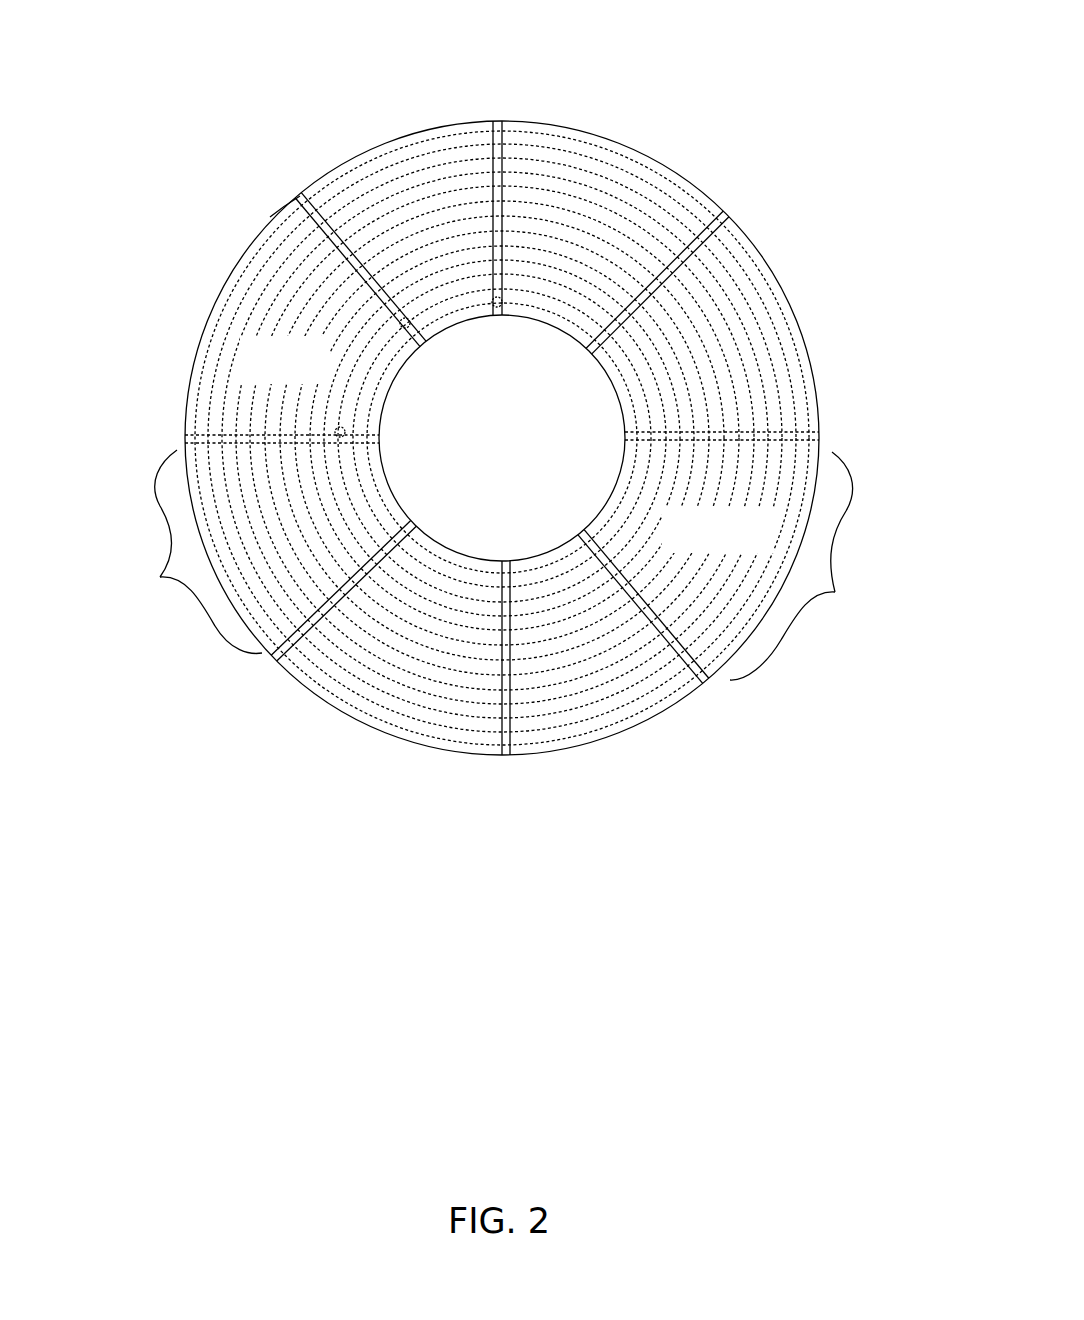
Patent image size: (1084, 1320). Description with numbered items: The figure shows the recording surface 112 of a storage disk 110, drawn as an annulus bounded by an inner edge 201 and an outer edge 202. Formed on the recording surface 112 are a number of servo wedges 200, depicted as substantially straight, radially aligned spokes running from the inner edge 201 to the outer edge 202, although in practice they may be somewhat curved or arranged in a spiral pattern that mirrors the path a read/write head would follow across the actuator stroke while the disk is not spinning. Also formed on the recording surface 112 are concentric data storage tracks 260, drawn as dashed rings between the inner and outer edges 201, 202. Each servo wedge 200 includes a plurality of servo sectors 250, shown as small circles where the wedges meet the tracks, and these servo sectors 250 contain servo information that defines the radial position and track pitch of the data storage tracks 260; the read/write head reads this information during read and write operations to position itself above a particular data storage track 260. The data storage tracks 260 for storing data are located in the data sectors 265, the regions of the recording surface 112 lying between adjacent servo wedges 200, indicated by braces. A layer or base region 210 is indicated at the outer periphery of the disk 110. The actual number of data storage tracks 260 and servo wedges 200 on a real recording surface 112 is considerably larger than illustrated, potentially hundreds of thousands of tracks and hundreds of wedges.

The storage disk 110 is at (728, 50).
The recording surface 112 is at (306, 370).
The servo wedge 200 is at (498, 89).
The inner edge 201 is at (428, 540).
The outer edge 202 is at (351, 718).
The base layer 210 is at (272, 215).
The servo sector 250 is at (501, 308).
The data storage track 260 is at (753, 258).
The data sector 265 is at (160, 577).